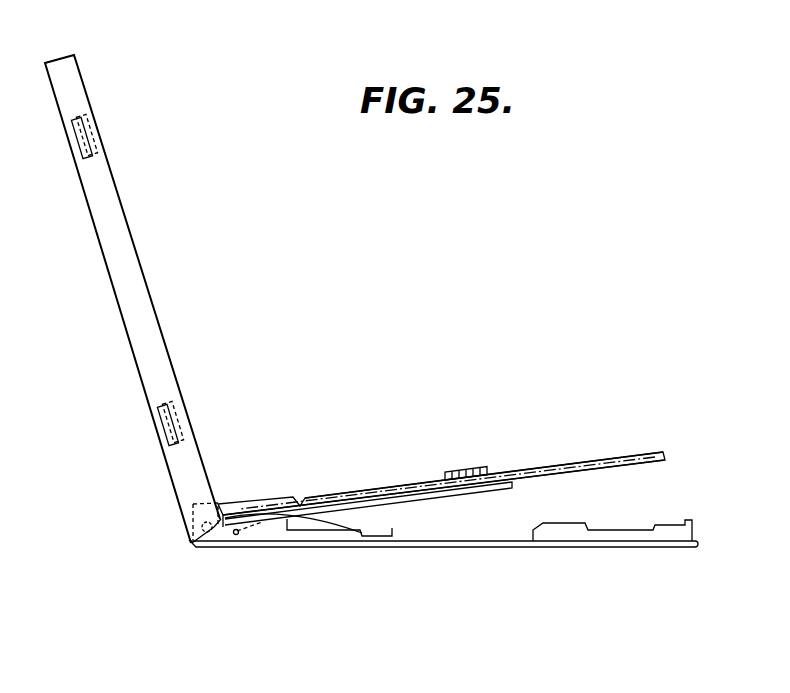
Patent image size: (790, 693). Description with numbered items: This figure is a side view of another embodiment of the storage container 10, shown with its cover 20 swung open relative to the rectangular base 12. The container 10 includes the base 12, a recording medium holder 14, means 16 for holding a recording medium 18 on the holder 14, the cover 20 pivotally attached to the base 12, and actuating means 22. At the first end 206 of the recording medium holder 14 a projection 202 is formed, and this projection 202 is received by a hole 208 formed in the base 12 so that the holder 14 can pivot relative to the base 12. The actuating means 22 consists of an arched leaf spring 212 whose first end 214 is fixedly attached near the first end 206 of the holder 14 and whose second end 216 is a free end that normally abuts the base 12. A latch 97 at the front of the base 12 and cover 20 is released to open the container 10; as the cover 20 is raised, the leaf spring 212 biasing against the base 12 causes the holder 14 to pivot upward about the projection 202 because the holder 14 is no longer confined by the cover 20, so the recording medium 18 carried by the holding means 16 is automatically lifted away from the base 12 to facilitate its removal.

The storage container 10 is at (64, 459).
The rectangular base 12 is at (512, 546).
The recording medium holder 14 is at (481, 490).
The means for holding a recording medium 16 is at (467, 476).
The recording medium 18 is at (596, 457).
The cover 20 is at (123, 257).
The actuating means 22 is at (301, 576).
The latch 97 is at (708, 508).
The projection 202 is at (236, 530).
The first end of the holder 206 is at (194, 546).
The hole 208 is at (234, 545).
The arched leaf spring 212 is at (362, 516).
The first end of the leaf spring 214 is at (270, 530).
The second end of the leaf spring 216 is at (357, 545).